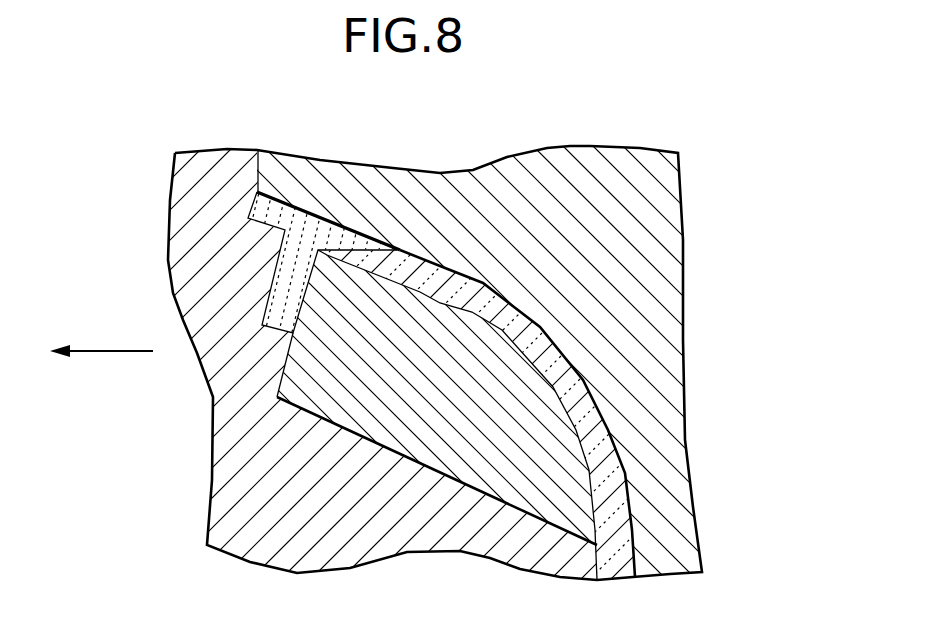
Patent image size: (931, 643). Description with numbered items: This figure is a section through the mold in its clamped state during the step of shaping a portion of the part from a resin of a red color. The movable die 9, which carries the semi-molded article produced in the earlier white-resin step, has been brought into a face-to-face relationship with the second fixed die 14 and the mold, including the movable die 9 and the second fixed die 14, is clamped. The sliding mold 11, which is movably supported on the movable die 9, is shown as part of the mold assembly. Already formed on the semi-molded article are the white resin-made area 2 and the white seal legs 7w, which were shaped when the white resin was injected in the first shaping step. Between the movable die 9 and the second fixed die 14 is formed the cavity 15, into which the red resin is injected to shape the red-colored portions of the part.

The white resin-made area 2 is at (620, 493).
The white seal legs 7w is at (277, 298).
The movable die 9 is at (230, 473).
The sliding mold 11 is at (498, 486).
The second fixed die 14 is at (653, 247).
The cavity 15 is at (309, 213).